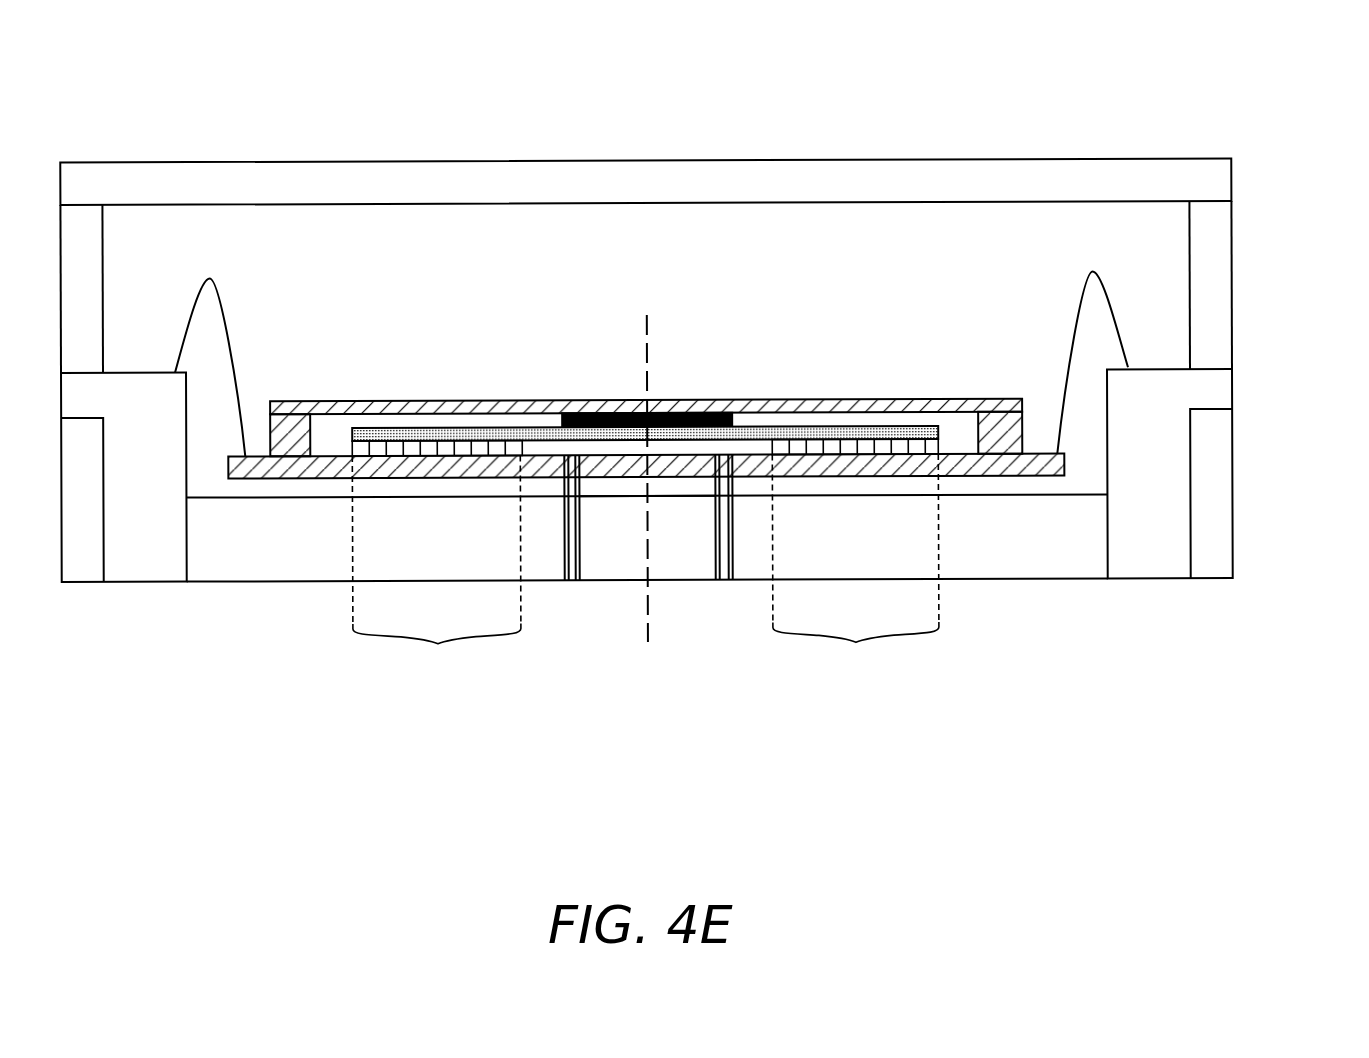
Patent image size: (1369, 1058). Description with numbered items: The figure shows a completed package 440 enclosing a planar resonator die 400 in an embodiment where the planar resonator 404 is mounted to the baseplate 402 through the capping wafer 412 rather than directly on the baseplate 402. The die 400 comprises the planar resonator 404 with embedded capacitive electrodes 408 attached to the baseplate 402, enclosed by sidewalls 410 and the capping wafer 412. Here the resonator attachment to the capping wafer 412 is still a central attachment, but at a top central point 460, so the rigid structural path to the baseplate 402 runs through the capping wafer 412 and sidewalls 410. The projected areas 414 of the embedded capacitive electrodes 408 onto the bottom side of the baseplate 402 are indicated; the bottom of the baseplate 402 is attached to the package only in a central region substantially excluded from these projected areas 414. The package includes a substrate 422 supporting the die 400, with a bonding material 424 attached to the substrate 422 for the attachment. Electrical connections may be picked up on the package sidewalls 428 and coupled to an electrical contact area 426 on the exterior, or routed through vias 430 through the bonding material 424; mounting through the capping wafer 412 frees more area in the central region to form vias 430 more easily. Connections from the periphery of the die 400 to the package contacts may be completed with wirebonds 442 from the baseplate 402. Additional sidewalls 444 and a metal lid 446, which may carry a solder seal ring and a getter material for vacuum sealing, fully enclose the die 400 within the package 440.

The planar resonator die 400 is at (669, 495).
The baseplate 402 is at (972, 467).
The planar resonator 404 is at (825, 430).
The embedded capacitive electrodes 408 is at (855, 445).
The sidewalls 410 is at (300, 420).
The capping wafer 412 is at (410, 405).
The projected areas 414 is at (645, 564).
The substrate 422 is at (1080, 570).
The bonding material 424 is at (623, 487).
The electrical contact area 426 is at (1225, 493).
The sidewalls 428 is at (1220, 397).
The vias 430 is at (552, 531).
The package 440 is at (714, 355).
The bellows 442 is at (1120, 313).
The additional sidewalls 444 is at (1230, 331).
The metal lid 446 is at (1138, 160).
The top central point 460 is at (669, 427).